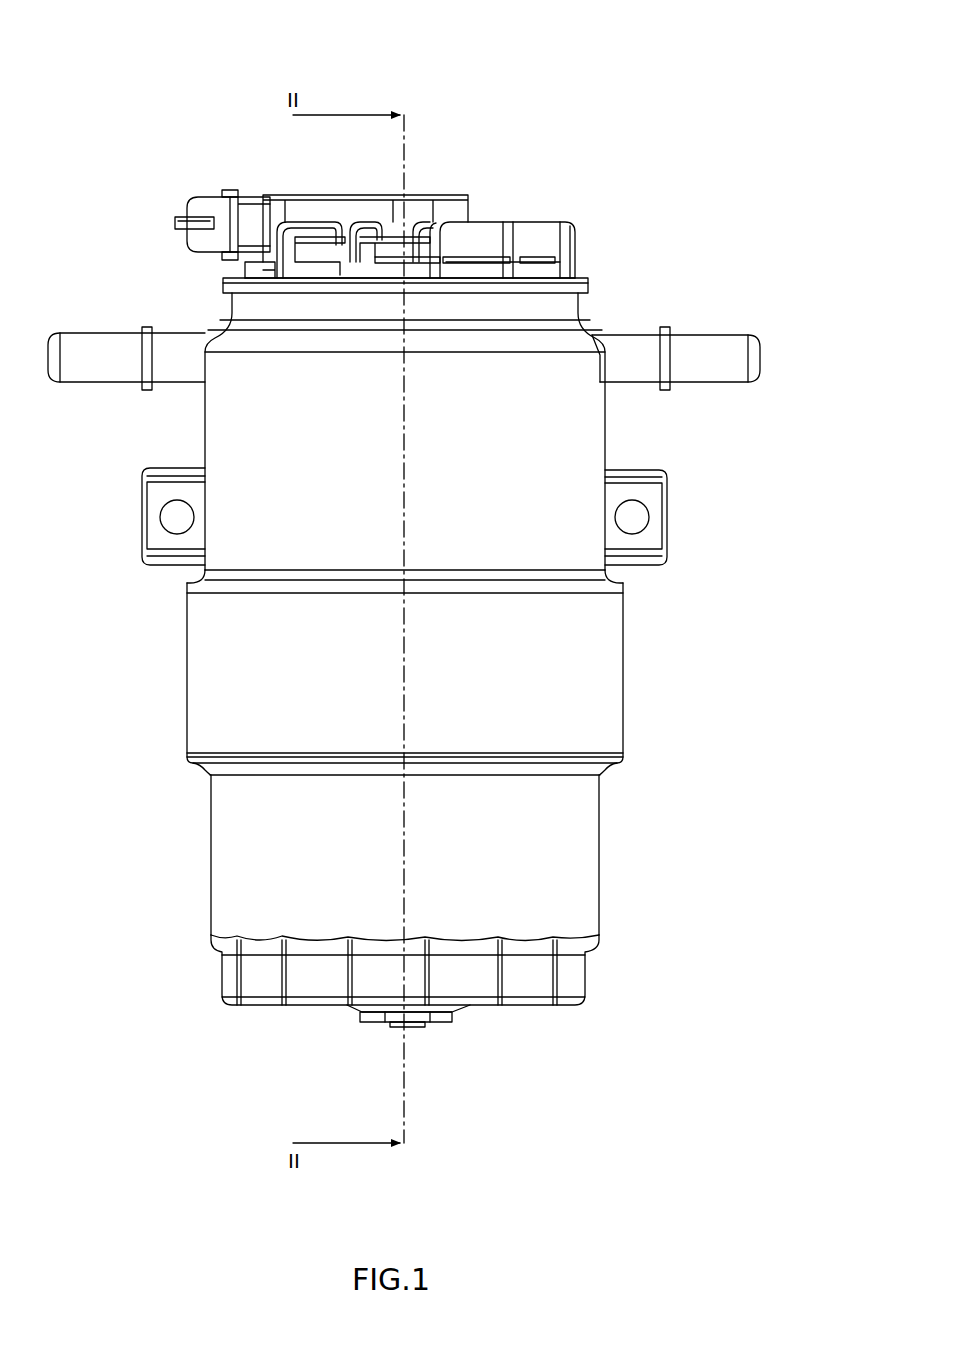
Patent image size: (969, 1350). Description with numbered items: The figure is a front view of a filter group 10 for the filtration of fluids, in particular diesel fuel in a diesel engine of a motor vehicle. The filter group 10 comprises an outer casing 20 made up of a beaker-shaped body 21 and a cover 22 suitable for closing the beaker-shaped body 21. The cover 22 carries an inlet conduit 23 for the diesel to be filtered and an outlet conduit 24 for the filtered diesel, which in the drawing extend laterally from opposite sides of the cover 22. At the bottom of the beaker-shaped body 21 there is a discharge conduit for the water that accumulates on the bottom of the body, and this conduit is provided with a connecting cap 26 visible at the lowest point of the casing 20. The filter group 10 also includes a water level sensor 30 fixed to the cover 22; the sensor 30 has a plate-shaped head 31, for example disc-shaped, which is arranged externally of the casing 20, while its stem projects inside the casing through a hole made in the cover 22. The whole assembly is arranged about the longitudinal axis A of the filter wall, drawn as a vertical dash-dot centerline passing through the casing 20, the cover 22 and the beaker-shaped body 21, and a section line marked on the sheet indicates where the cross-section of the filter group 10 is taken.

The filter group 10 is at (120, 133).
The outer casing 20 is at (152, 588).
The beaker-shaped body 21 is at (563, 843).
The cover 22 is at (563, 466).
The inlet conduit 23 is at (124, 347).
The outlet conduit 24 is at (715, 345).
The connecting cap 26 is at (375, 1020).
The water level sensor 30 is at (490, 220).
The plate-shaped head 31 is at (527, 232).
The longitudinal axis A is at (404, 638).